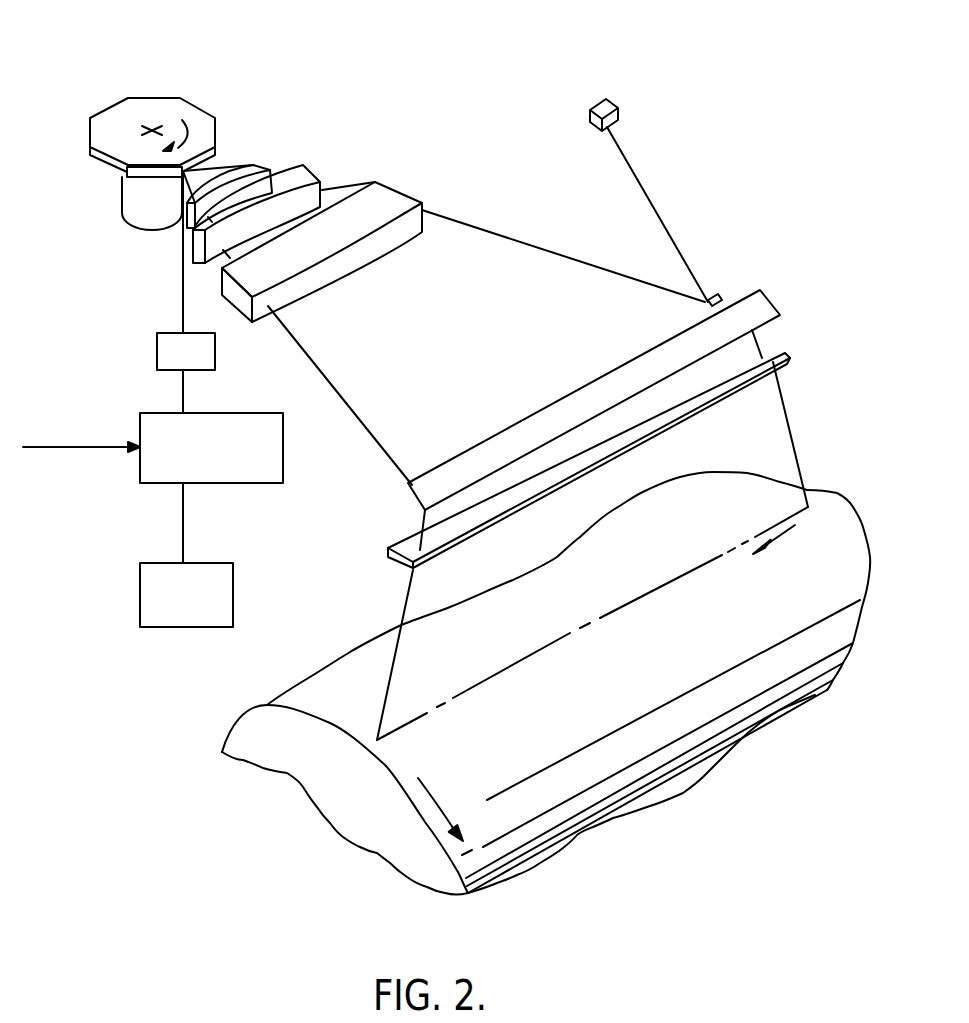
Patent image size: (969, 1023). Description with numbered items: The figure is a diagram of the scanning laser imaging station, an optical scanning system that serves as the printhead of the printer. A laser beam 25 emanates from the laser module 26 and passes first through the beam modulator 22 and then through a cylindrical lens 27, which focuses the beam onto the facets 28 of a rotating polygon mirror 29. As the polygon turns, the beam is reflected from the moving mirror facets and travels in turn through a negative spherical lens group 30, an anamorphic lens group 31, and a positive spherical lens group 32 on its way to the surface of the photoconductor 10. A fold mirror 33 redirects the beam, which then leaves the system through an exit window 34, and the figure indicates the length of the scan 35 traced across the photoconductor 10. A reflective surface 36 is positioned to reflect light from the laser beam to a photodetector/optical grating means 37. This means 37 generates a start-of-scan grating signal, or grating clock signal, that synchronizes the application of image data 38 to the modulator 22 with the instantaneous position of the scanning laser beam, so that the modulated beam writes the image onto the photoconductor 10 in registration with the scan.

The photoconductor 10 is at (700, 750).
The beam modulator 22 is at (283, 465).
The laser beam 25 is at (183, 548).
The laser module 26 is at (233, 600).
The cylindrical lens 27 is at (215, 355).
The facets 28 is at (187, 172).
The rotating polygon mirror 29 is at (154, 103).
The negative spherical lens group 30 is at (258, 167).
The anamorphic lens group 31 is at (313, 168).
The positive spherical lens group 32 is at (392, 203).
The fold mirror 33 is at (757, 290).
The exit window 34 is at (777, 350).
The scan 35 is at (613, 612).
The reflective surface 36 is at (717, 291).
The photodetector/optical grating means 37 is at (613, 104).
The image data 38 is at (98, 447).